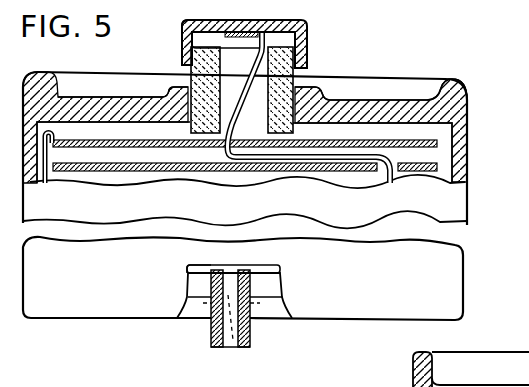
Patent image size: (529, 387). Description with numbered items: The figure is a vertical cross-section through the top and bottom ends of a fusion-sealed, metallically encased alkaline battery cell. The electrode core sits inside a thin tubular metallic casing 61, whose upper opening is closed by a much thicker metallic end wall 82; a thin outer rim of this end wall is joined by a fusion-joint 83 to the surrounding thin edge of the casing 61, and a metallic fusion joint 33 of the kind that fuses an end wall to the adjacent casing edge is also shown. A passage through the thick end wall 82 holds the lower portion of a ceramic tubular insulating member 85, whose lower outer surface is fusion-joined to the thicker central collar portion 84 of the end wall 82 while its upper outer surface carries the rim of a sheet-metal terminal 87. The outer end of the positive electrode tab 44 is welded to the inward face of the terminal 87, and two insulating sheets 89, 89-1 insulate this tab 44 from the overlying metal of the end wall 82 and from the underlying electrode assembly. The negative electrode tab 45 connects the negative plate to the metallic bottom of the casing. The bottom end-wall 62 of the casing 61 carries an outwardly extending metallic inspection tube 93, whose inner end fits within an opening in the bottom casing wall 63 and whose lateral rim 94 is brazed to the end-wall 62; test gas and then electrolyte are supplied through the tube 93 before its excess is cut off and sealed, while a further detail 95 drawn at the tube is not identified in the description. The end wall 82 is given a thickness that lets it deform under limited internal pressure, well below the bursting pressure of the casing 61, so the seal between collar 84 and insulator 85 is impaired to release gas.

The metallic fusion joint 33 is at (425, 352).
The positive electrode tab 44 is at (377, 172).
The negative electrode tab 45 is at (210, 265).
The tubular metallic casing 61 is at (461, 164).
The bottom end-wall 62 is at (270, 292).
The bottom casing wall 63 is at (190, 312).
The end wall 82 is at (358, 107).
The fusion-joint 83 is at (455, 80).
The central collar portion 84 is at (308, 92).
The tubular insulating member 85 is at (299, 25).
The metallic terminal 87 is at (182, 26).
The insulating sheet 89 is at (53, 172).
The insulating sheet 89-1 is at (88, 172).
The metallic inspection tube 93 is at (225, 346).
The lateral rim 94 is at (252, 268).
The thread 95 is at (249, 330).